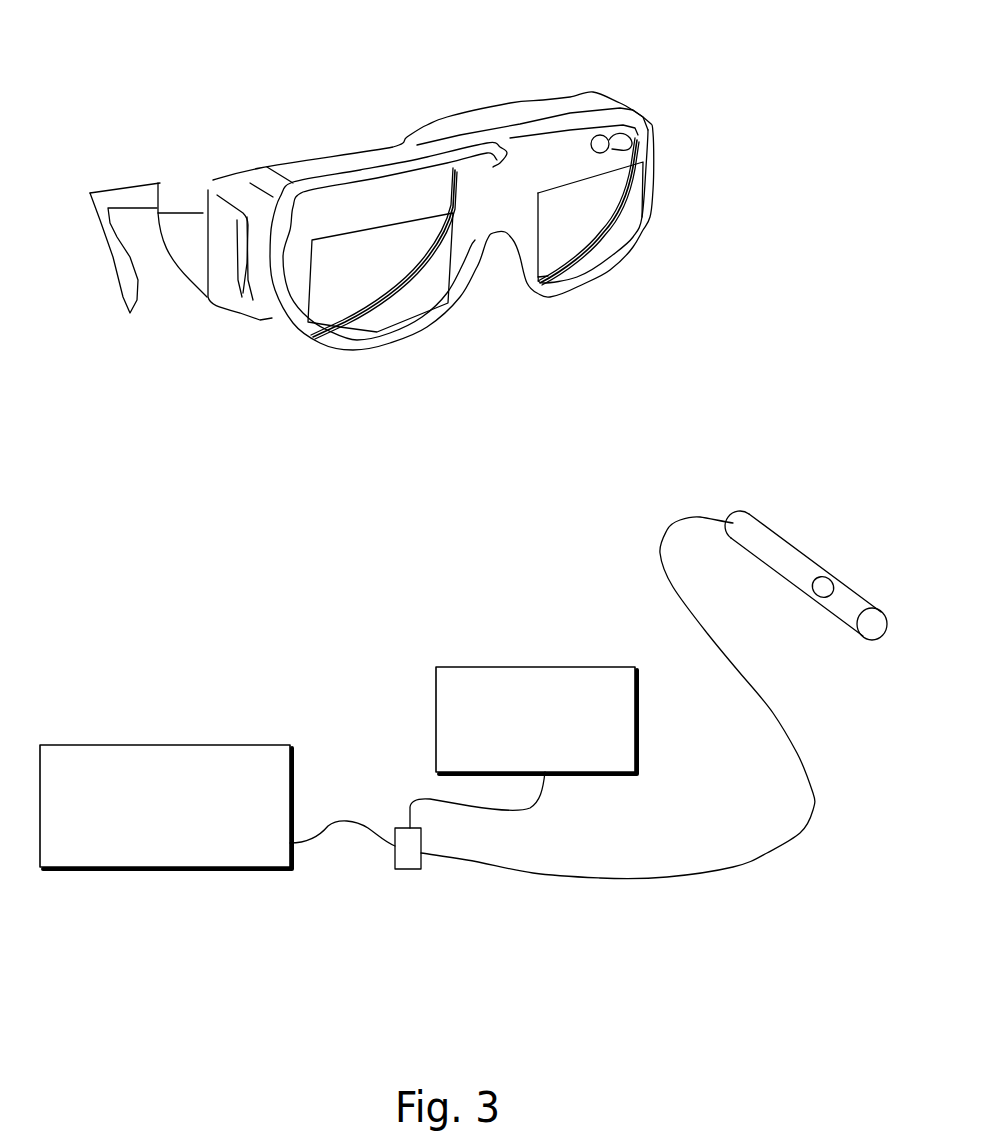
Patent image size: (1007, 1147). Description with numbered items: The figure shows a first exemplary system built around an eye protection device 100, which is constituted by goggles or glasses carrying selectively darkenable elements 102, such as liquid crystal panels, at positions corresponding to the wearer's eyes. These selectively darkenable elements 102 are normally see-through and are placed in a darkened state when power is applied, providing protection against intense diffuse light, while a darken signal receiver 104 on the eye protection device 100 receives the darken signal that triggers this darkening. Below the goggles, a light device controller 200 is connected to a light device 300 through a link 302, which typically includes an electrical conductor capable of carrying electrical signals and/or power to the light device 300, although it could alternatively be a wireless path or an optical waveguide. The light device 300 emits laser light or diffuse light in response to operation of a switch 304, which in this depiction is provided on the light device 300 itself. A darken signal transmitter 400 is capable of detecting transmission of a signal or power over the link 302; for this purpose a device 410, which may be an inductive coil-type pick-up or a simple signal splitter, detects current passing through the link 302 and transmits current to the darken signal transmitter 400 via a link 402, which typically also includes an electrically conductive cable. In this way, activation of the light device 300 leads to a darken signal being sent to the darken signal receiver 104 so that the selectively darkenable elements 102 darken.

The eye protection device 100 is at (194, 83).
The selectively darkenable elements 102 is at (582, 257).
The darken signal receiver 104 is at (627, 177).
The light device controller 200 is at (160, 745).
The light emission device 300 is at (772, 537).
The link 302 is at (756, 868).
The switch 304 is at (823, 590).
The darken signal transmitter 400 is at (458, 667).
The link 402 is at (545, 772).
The device 410 is at (410, 869).